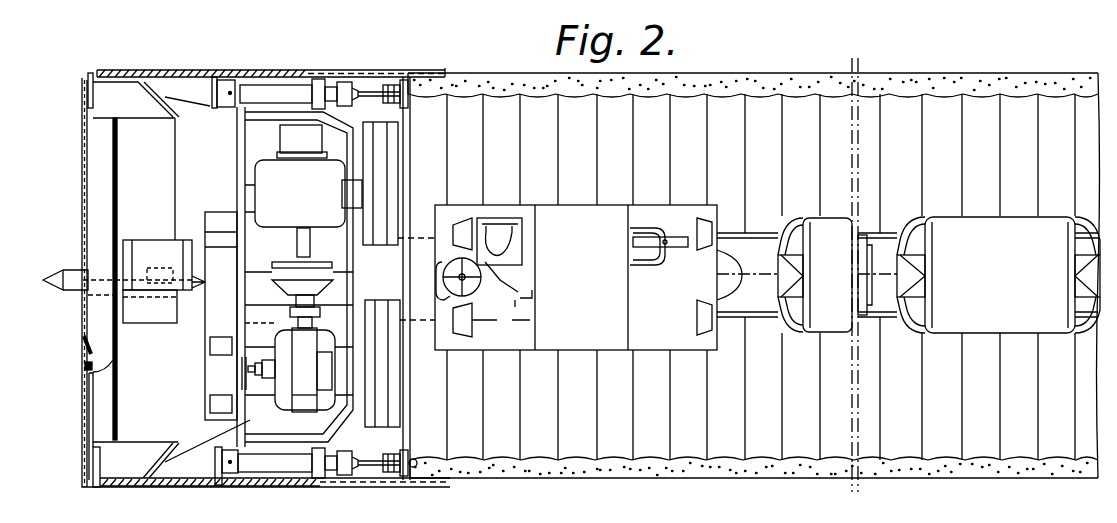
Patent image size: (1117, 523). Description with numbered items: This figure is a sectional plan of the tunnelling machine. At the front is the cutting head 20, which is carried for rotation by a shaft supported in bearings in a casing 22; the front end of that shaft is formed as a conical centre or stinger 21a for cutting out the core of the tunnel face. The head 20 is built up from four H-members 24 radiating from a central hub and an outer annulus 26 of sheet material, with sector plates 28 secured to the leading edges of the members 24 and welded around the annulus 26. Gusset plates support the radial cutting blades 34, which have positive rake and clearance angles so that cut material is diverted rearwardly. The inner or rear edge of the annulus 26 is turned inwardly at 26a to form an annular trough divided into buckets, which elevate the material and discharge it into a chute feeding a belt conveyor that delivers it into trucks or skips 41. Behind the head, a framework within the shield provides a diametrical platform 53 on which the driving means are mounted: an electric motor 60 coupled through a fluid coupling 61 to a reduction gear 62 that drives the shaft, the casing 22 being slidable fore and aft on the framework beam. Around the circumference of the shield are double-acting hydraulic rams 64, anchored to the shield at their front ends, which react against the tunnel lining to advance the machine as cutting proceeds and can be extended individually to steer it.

The cutting head 20 is at (82, 134).
The conical centre or stinger 21a is at (72, 270).
The casing 22 is at (155, 312).
The H-members 24 is at (100, 315).
The radial cutting blades 34 is at (84, 337).
The sector plates 28 is at (88, 403).
The outer annulus 26 is at (130, 475).
The inwardly turned edge of annulus 26a is at (173, 441).
The diametrical platform 53 is at (328, 123).
The electric motor 60 is at (303, 172).
The fluid coupling 61 is at (294, 278).
The reduction gear 62 is at (252, 421).
The double-acting hydraulic rams 64 is at (238, 91).
The trucks or skips 41 is at (937, 228).